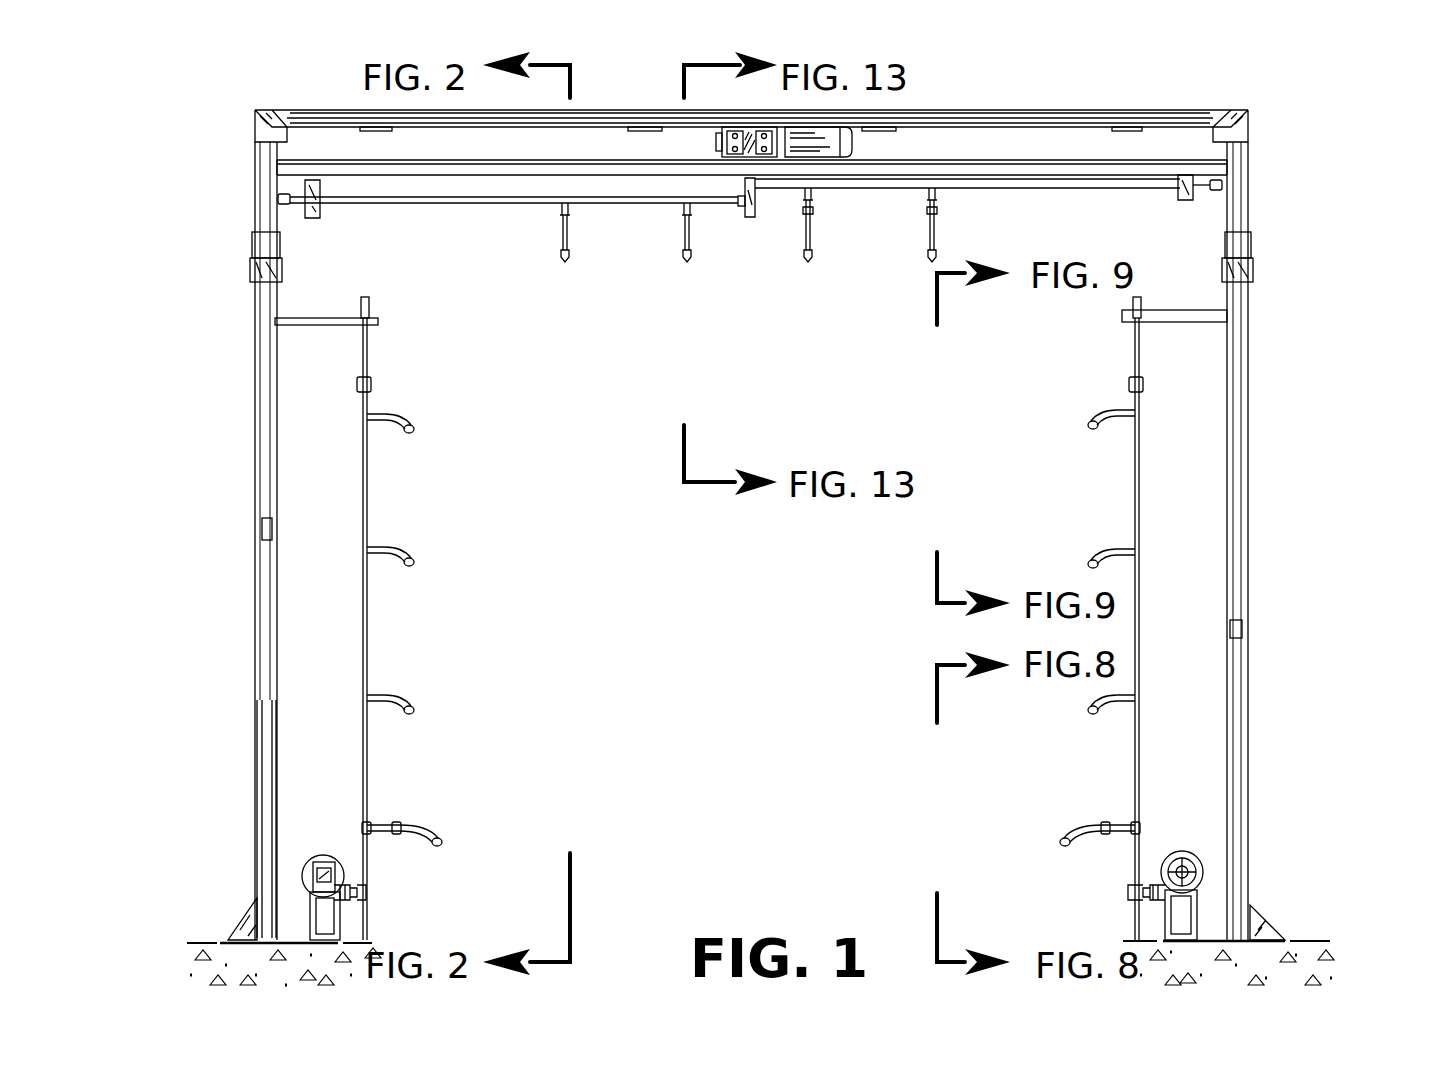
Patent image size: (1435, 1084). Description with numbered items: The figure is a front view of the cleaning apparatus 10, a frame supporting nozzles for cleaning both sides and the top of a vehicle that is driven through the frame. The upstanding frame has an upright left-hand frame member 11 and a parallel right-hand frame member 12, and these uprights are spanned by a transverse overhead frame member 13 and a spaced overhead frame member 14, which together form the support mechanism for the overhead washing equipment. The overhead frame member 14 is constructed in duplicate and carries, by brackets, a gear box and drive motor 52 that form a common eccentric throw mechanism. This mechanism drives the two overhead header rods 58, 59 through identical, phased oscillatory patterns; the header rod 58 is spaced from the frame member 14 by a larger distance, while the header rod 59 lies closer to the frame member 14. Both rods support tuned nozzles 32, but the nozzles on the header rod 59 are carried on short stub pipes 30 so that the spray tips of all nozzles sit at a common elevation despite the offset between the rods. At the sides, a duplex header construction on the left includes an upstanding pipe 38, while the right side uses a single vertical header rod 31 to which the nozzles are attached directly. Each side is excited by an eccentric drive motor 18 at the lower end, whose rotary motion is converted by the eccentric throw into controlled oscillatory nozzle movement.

The cleaning apparatus 10 is at (1280, 550).
The left-hand frame member 11 is at (265, 440).
The right-hand frame member 12 is at (1236, 400).
The transverse overhead frame member 13 is at (1003, 118).
The overhead frame member 14 is at (352, 172).
The eccentric drive motor 18 is at (321, 857).
The short stub pipe 30 is at (926, 212).
The header rod 31 is at (1135, 788).
The tuned nozzles 32 is at (385, 550).
The upstanding pipe 38 is at (368, 650).
The drive motor 52 is at (823, 133).
The overhead header rod 58 is at (456, 212).
The overhead header rod 59 is at (1130, 195).